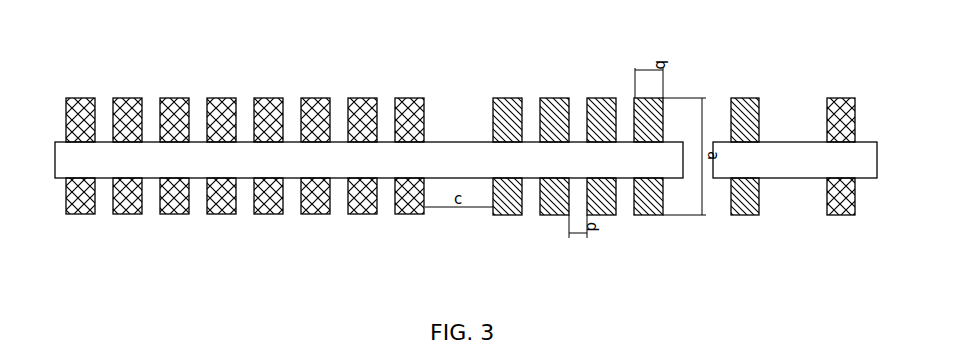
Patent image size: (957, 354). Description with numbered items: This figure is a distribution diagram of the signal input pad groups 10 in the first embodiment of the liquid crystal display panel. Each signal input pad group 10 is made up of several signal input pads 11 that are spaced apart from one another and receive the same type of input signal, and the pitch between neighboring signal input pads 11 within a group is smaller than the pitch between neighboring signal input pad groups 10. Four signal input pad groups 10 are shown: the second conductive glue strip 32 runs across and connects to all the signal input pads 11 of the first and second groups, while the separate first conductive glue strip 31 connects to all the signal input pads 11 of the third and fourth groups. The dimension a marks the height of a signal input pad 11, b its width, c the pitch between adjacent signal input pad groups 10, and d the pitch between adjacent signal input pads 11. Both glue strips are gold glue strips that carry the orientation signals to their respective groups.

The signal input pad group 10 is at (447, 222).
The signal input pad 11 is at (355, 98).
The first conductive glue strip 31 is at (780, 155).
The second conductive glue strip 32 is at (445, 150).